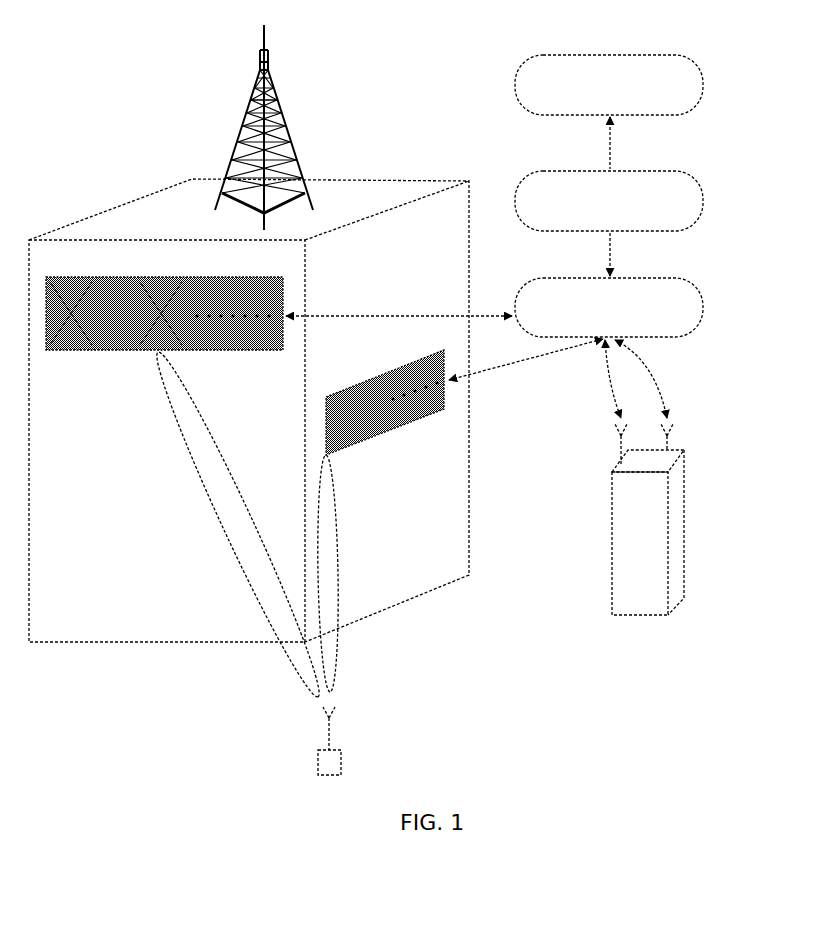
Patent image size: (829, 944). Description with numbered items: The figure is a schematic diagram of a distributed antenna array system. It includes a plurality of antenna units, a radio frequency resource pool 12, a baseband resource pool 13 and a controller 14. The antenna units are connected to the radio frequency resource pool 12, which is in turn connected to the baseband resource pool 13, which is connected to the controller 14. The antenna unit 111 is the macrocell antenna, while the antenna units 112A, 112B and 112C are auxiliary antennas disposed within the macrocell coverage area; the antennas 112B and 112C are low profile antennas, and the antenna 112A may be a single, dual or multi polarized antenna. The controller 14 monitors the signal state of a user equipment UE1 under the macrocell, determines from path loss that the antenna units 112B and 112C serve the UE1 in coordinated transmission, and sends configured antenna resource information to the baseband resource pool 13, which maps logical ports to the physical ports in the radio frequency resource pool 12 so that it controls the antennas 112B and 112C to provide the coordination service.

The antenna unit 111 is at (265, 51).
The antenna unit 112A is at (684, 497).
The antenna unit 112B is at (80, 351).
The antenna unit 112C is at (355, 447).
The radio frequency resource pool 12 is at (703, 311).
The baseband resource pool 13 is at (703, 204).
The controller 14 is at (703, 88).
The user equipment UE1 is at (355, 741).